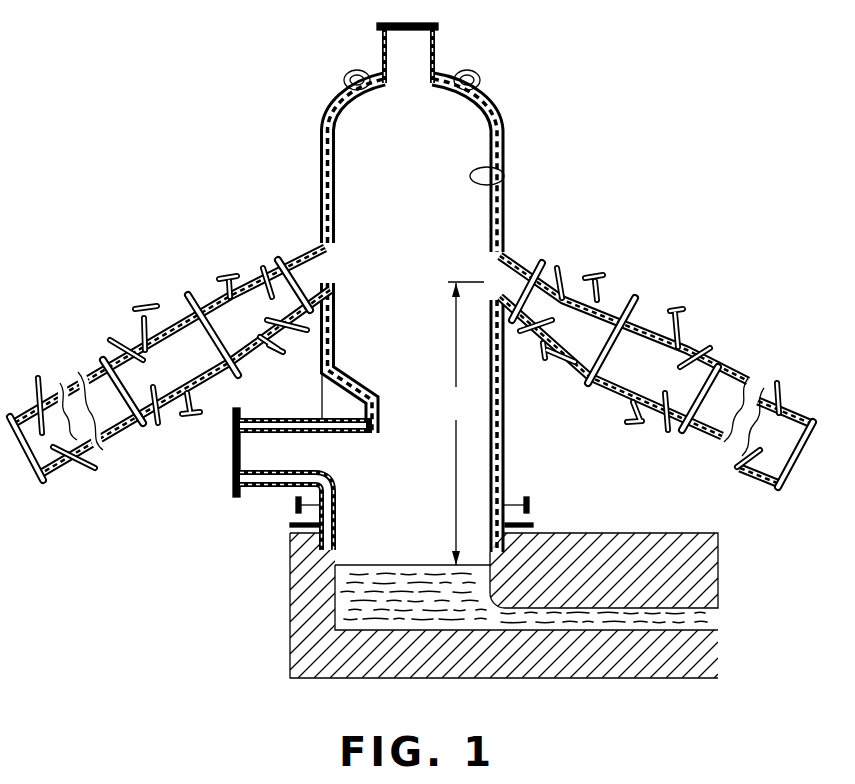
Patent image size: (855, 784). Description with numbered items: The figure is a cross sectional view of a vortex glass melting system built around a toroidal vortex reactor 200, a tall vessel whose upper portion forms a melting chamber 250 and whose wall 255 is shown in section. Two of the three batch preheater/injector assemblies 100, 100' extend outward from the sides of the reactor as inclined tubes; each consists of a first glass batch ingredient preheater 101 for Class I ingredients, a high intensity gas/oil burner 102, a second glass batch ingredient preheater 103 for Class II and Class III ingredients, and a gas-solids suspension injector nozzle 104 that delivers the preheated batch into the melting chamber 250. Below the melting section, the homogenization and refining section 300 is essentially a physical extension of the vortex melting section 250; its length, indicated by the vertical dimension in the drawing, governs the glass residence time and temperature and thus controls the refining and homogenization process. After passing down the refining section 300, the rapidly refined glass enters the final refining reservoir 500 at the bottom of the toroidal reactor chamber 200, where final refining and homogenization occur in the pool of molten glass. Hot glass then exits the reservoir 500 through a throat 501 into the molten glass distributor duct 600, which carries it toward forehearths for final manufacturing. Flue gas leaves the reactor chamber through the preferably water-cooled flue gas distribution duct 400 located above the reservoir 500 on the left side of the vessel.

The batch preheater/injector assembly 100 is at (656, 370).
The batch preheater/injector assembly 100' is at (170, 351).
The first glass batch ingredient preheater 101 is at (713, 418).
The high intensity gas/oil burner 102 is at (632, 368).
The second glass batch ingredient preheater 103 is at (578, 358).
The gas-solids suspension injector nozzle 104 is at (518, 266).
The toroidal vortex reactor 200 is at (512, 136).
The melting chamber 250 is at (383, 174).
The vessel wall 255 is at (504, 178).
The homogenization and refining section 300 is at (460, 423).
The flue gas distribution duct 400 is at (270, 460).
The final refining reservoir 500 is at (357, 608).
The throat 501 is at (403, 633).
The molten glass distributor duct 600 is at (578, 612).